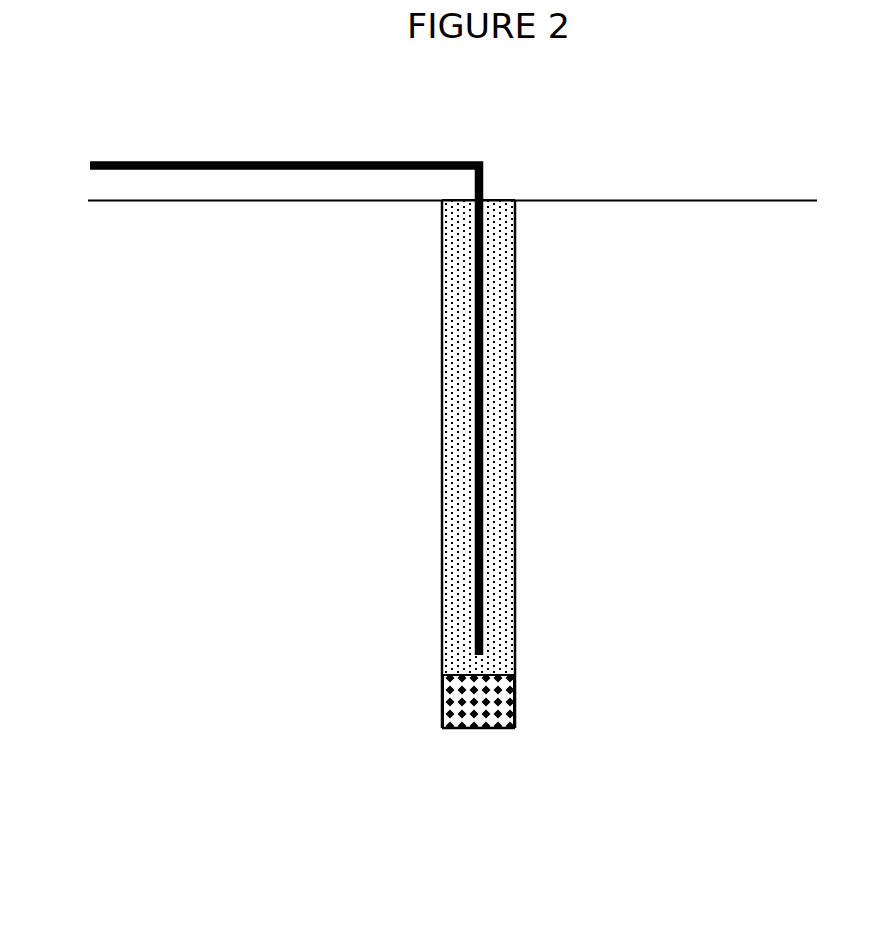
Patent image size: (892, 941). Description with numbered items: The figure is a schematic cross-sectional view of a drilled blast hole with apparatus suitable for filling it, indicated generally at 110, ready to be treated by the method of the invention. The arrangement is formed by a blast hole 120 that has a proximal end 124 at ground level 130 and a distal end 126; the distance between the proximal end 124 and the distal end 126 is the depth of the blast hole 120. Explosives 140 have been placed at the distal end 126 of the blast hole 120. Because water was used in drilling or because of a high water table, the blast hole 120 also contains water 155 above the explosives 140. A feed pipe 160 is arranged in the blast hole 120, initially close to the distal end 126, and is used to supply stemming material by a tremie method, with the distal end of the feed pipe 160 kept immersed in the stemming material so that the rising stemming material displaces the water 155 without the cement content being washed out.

The drilled blast hole containing apparatus 110 is at (400, 522).
The blast hole 120 is at (517, 587).
The proximal end 124 is at (442, 202).
The distal end 126 is at (480, 728).
The ground level 130 is at (232, 202).
The explosives 140 is at (505, 713).
The water 155 is at (462, 412).
The feed pipe 160 is at (298, 163).